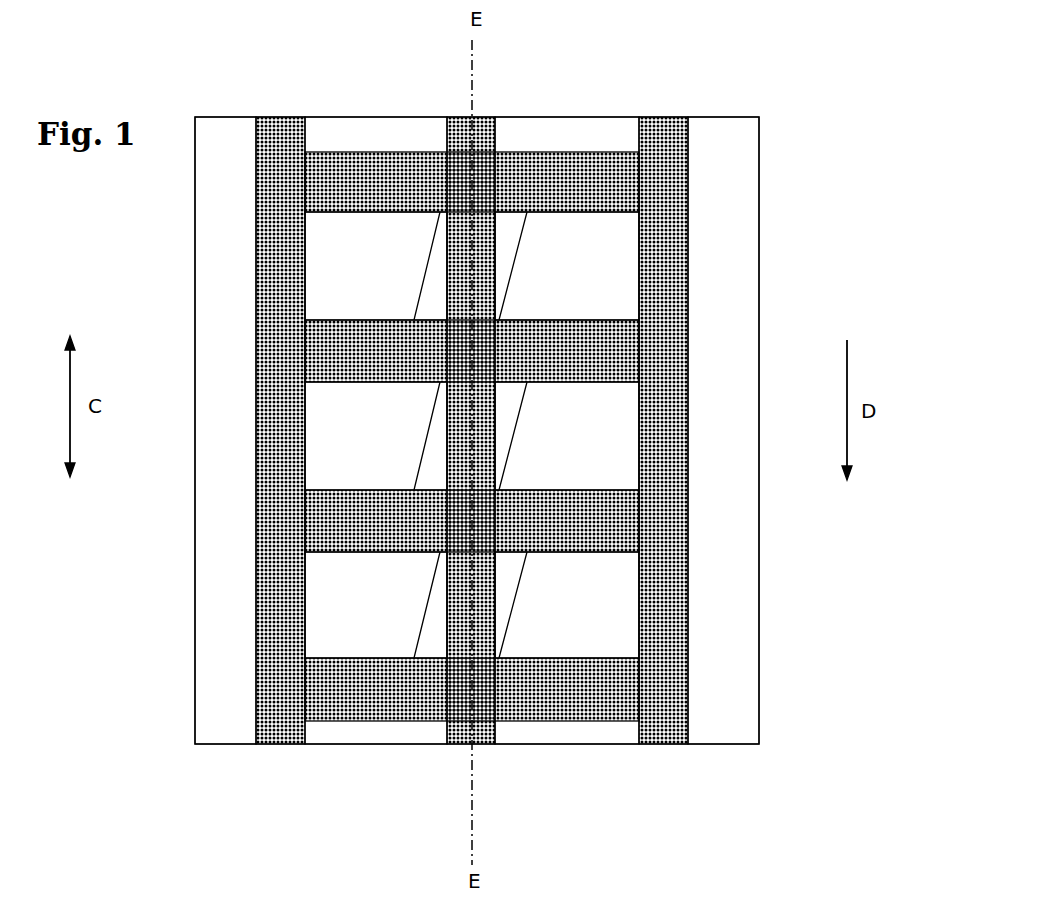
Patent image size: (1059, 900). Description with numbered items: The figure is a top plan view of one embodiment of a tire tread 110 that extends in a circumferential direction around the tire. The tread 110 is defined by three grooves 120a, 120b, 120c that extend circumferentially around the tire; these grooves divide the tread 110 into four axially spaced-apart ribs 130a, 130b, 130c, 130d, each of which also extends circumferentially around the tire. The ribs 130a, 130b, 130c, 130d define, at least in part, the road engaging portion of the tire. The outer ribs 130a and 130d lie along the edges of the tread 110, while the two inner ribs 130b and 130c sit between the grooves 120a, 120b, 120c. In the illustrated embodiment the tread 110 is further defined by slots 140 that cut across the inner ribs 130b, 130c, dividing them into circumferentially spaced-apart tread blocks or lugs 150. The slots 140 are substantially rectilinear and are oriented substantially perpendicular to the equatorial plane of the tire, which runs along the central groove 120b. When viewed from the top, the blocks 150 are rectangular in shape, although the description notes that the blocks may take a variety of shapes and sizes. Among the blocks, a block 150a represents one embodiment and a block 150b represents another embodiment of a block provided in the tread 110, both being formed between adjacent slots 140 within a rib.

The tire tread 110 is at (677, 82).
The groove 120a is at (277, 728).
The groove 120b is at (463, 732).
The groove 120c is at (667, 733).
The rib 130a is at (213, 723).
The rib 130b is at (376, 740).
The rib 130c is at (567, 735).
The rib 130d is at (745, 735).
The slot 140 is at (400, 203).
The tread block 150 is at (395, 285).
The block 150a is at (403, 450).
The block 150b is at (400, 617).